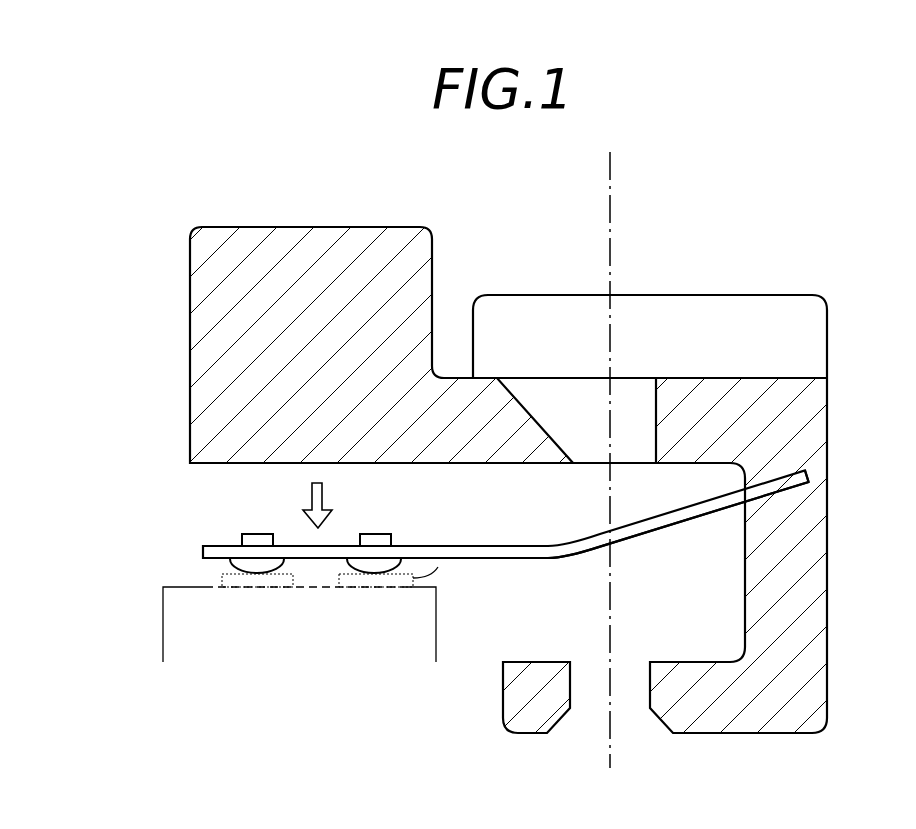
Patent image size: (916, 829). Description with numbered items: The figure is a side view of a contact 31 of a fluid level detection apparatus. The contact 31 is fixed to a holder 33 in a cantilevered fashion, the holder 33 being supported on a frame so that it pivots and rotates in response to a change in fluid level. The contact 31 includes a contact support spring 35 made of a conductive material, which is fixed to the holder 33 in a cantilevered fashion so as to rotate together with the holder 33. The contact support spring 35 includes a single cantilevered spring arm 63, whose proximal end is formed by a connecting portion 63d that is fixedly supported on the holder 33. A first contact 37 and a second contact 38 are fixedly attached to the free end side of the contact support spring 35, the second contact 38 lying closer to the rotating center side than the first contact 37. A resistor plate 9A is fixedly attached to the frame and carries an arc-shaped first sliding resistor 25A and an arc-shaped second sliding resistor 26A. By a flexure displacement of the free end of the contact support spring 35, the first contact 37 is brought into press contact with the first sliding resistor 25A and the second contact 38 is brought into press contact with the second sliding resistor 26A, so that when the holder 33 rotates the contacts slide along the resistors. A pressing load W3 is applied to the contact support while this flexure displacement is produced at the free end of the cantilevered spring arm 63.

The holder 33 is at (683, 295).
The cantilevered spring arm 63 is at (537, 559).
The connecting portion 63d is at (775, 492).
The contact 31 is at (678, 522).
The contact support spring 35 is at (628, 541).
The second sliding resistor 26A is at (440, 567).
The first sliding resistor 25A is at (220, 577).
The resistor plate 9A is at (163, 627).
The first contact 37 is at (258, 566).
The second contact 38 is at (377, 567).
The pressing load W3 is at (312, 497).